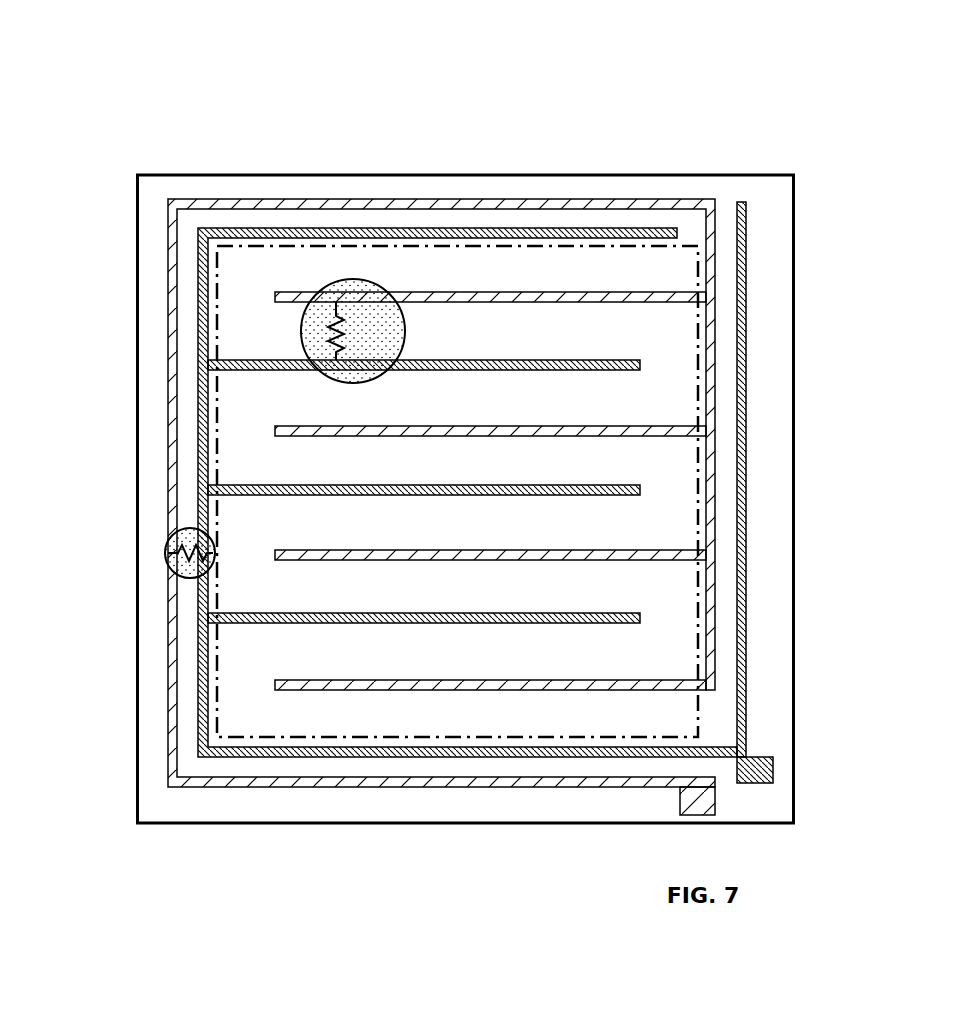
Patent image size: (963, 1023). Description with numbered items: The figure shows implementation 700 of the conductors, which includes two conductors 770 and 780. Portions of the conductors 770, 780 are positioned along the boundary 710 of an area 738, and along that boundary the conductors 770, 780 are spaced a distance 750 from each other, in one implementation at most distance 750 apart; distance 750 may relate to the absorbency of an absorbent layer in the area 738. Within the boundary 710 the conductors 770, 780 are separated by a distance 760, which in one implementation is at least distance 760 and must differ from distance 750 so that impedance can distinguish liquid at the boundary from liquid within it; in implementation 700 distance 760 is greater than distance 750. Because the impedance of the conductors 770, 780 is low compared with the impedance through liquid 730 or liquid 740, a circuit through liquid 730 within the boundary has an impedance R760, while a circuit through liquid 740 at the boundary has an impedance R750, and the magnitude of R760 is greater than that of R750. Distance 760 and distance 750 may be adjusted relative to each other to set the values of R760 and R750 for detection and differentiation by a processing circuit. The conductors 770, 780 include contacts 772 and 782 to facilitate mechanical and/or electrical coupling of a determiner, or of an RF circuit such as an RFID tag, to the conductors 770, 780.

The implementation 700 is at (94, 53).
The area 738 is at (614, 176).
The conductor 770 is at (360, 789).
The boundary 710 is at (556, 246).
The conductor 780 is at (748, 590).
The contact 782 is at (760, 786).
The contact 772 is at (681, 797).
The distance 750 is at (473, 278).
The distance 760 is at (516, 358).
The liquid 730 is at (302, 340).
The impedance R760 is at (364, 331).
The liquid 740 is at (168, 557).
The impedance R750 is at (176, 541).